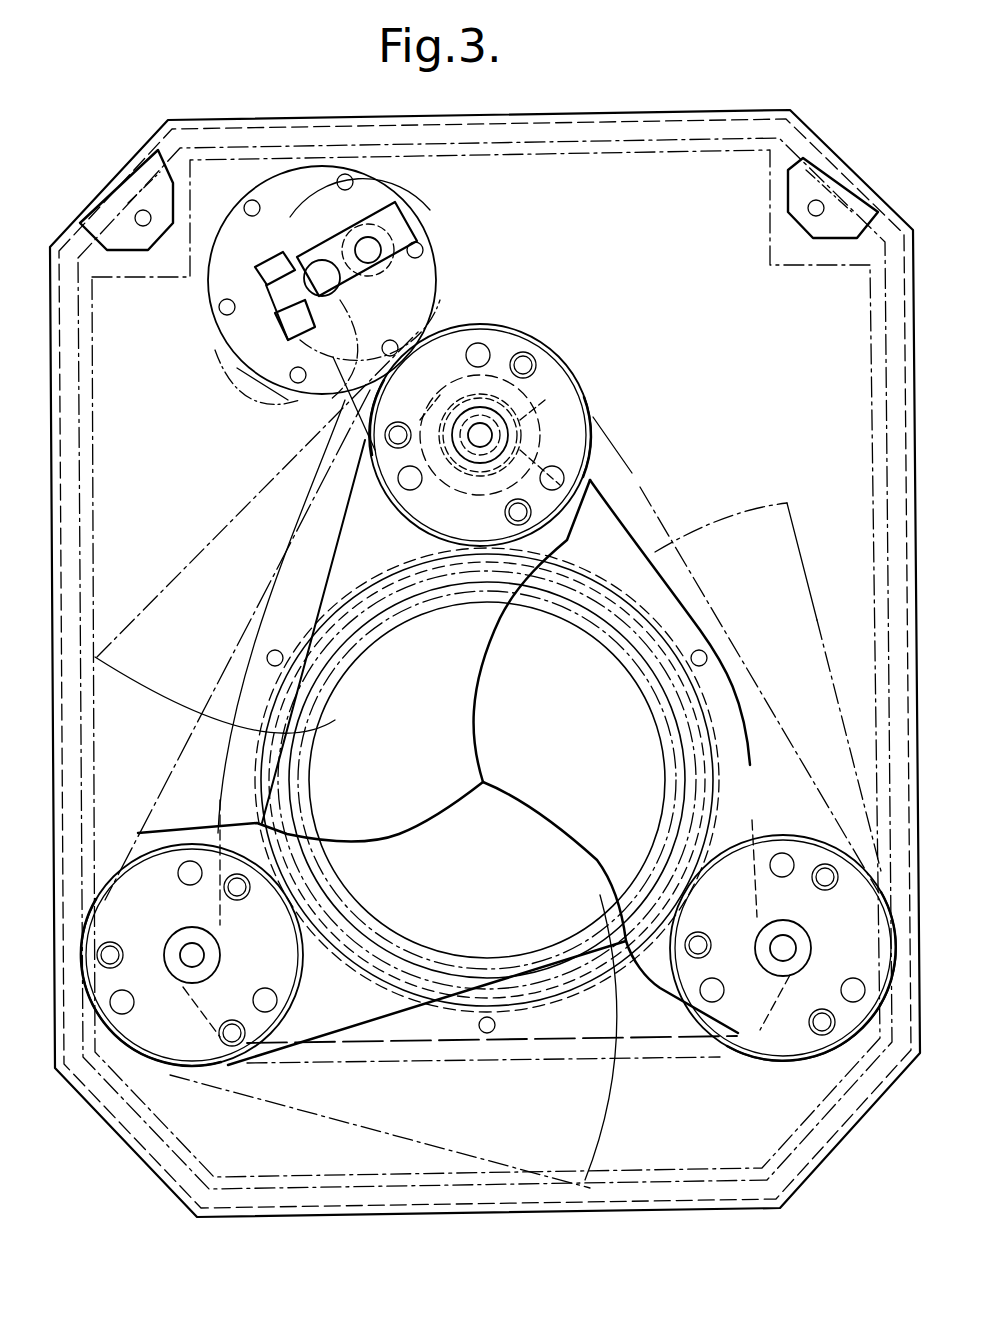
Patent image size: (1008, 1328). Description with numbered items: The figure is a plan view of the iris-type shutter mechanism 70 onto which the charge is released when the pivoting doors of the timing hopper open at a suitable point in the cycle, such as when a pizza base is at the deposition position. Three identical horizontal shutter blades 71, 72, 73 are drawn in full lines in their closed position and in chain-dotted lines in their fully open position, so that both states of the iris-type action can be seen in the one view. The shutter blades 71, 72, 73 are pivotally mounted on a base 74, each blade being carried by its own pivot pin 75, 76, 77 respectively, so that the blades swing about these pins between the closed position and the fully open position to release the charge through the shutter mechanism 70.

The iris-type shutter mechanism 70 is at (660, 102).
The shutter blade 71 is at (335, 755).
The shutter blade 72 is at (563, 645).
The shutter blade 73 is at (544, 907).
The base 74 is at (732, 170).
The pivot pin 75 is at (480, 437).
The pivot pin 76 is at (782, 952).
The pivot pin 77 is at (183, 952).